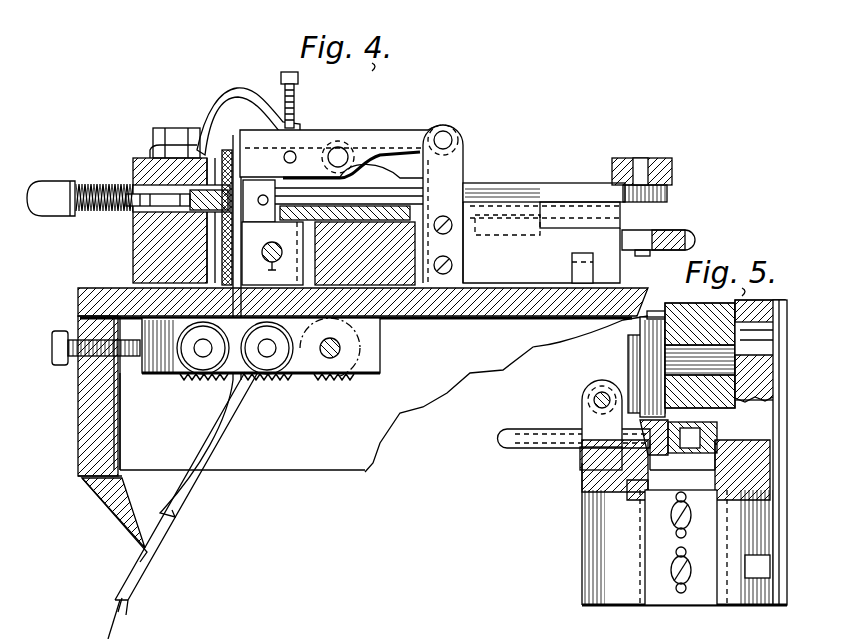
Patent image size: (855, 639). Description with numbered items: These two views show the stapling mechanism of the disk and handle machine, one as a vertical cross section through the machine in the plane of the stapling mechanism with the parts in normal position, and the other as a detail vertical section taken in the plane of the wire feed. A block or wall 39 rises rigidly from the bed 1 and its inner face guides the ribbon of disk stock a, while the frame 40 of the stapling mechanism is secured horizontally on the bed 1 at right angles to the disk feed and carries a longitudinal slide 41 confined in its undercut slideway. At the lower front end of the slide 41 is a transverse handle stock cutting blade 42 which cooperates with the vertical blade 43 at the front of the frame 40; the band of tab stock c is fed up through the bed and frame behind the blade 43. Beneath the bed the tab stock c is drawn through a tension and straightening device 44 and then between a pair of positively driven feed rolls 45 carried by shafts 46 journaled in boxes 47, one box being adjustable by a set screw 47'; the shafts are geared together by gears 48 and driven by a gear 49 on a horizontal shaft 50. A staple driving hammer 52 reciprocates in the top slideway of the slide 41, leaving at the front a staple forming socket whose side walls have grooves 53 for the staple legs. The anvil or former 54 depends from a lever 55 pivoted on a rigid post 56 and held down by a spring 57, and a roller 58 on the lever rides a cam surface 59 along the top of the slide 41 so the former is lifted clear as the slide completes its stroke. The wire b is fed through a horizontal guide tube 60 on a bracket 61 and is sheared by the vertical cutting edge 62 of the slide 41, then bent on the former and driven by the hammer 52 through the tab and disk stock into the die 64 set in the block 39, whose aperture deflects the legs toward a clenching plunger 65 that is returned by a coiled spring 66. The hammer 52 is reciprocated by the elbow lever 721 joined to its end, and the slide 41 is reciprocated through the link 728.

In FIG. 4, the bed 1 is at (525, 300).
In FIG. 4, the block or wall 39 is at (137, 250).
In FIG. 4, the frame of the stapling mechanism 40 is at (452, 135).
In FIG. 5, the frame of the stapling mechanism 40 is at (618, 558).
In FIG. 4, the slide 41 is at (463, 142).
In FIG. 5, the slide 41 is at (718, 442).
In FIG. 4, the handle stock cutting blade 42 is at (272, 253).
In FIG. 5, the handle stock cutting blade 42 is at (655, 478).
In FIG. 4, the vertical blade 43 is at (250, 266).
In FIG. 5, the vertical blade 43 is at (657, 563).
In FIG. 4, the tension and straightening device 44 is at (184, 506).
In FIG. 4, the feed rolls 45 is at (194, 387).
In FIG. 4, the shafts 46 is at (204, 357).
In FIG. 4, the journal boxes 47 is at (273, 394).
In FIG. 4, the set screw 47' is at (92, 393).
In FIG. 4, the gears 48 is at (212, 376).
In FIG. 4, the gear 49 is at (338, 380).
In FIG. 4, the horizontal shaft 50 is at (329, 360).
In FIG. 4, the staple driving hammer 52 is at (480, 197).
In FIG. 5, the staple driving hammer 52 is at (705, 418).
In FIG. 4, the grooves 53 is at (285, 195).
In FIG. 5, the grooves 53 is at (717, 432).
In FIG. 4, the anvil or former 54 is at (262, 182).
In FIG. 4, the lever 55 is at (360, 137).
In FIG. 5, the lever 55 is at (678, 326).
In FIG. 4, the post 56 is at (470, 172).
In FIG. 5, the post 56 is at (785, 364).
In FIG. 4, the spring 57 is at (226, 95).
In FIG. 4, the roller 58 is at (355, 172).
In FIG. 5, the roller 58 is at (634, 361).
In FIG. 4, the cam surface 59 is at (357, 237).
In FIG. 5, the cam surface 59 is at (594, 421).
In FIG. 5, the guide tube 60 is at (556, 447).
In FIG. 5, the bracket 61 is at (584, 395).
In FIG. 5, the cutting edge 62 is at (668, 420).
In FIG. 4, the die or platen 64 is at (163, 210).
In FIG. 4, the clenching tool or plunger 65 is at (173, 187).
In FIG. 4, the coiled spring 66 is at (96, 181).
In FIG. 4, the elbow lever 721 is at (672, 166).
In FIG. 5, the elbow lever 721 is at (700, 638).
In FIG. 4, the link 728 is at (674, 236).
In FIG. 4, the disk stock a is at (207, 130).
In FIG. 4, the wire b is at (275, 190).
In FIG. 5, the wire b is at (507, 440).
In FIG. 4, the handle or tab stock c is at (232, 103).